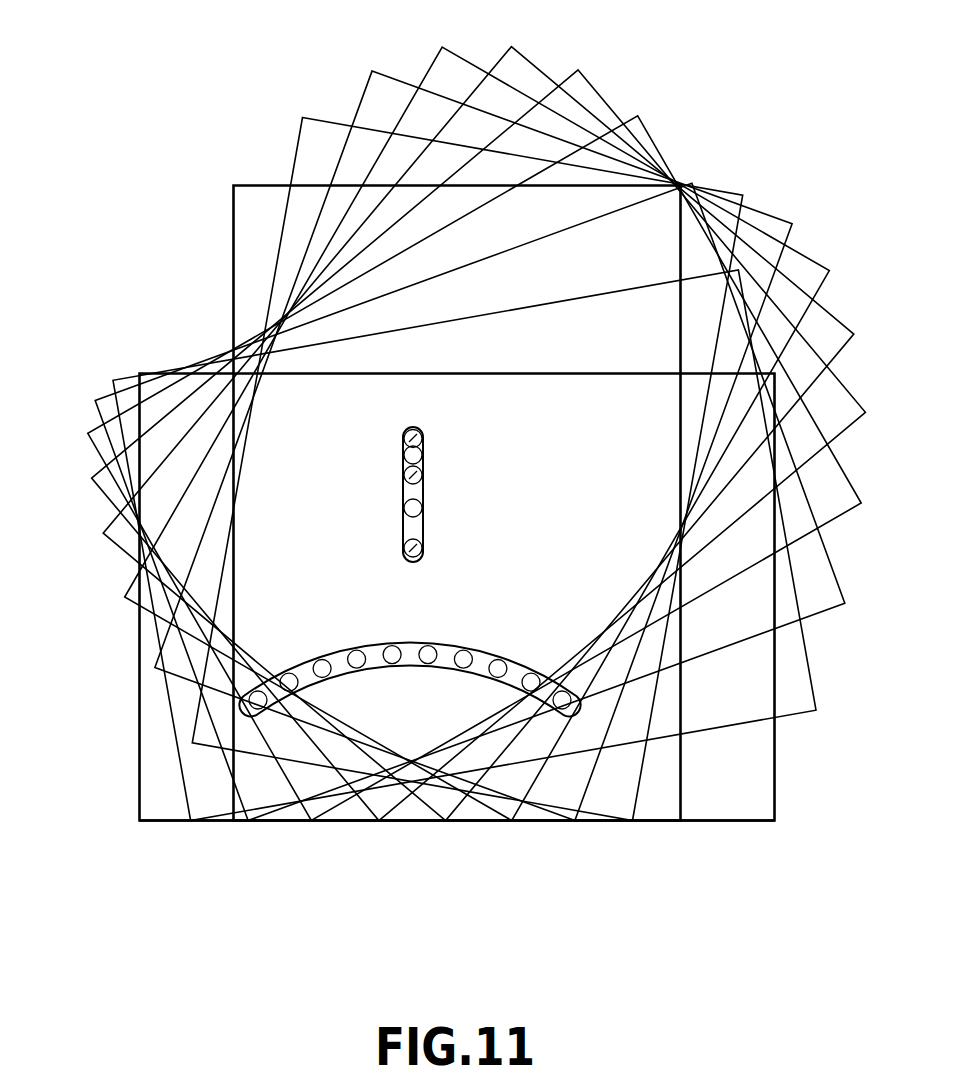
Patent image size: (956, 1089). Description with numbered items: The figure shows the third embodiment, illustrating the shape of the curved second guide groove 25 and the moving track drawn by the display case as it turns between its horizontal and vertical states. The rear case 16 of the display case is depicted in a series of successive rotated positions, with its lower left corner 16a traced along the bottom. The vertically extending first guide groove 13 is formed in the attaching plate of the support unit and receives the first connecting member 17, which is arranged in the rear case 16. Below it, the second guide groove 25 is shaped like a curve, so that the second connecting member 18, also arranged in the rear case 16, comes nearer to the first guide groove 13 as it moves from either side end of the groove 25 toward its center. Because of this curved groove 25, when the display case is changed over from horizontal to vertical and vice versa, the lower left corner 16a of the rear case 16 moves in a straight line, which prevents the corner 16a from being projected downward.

The first guide groove 13 is at (404, 492).
The rear case 16 is at (134, 638).
The lower left corner 16a is at (137, 822).
The first connecting member 17 is at (422, 440).
The second connecting member 18 is at (262, 692).
The second guide groove 25 is at (408, 666).